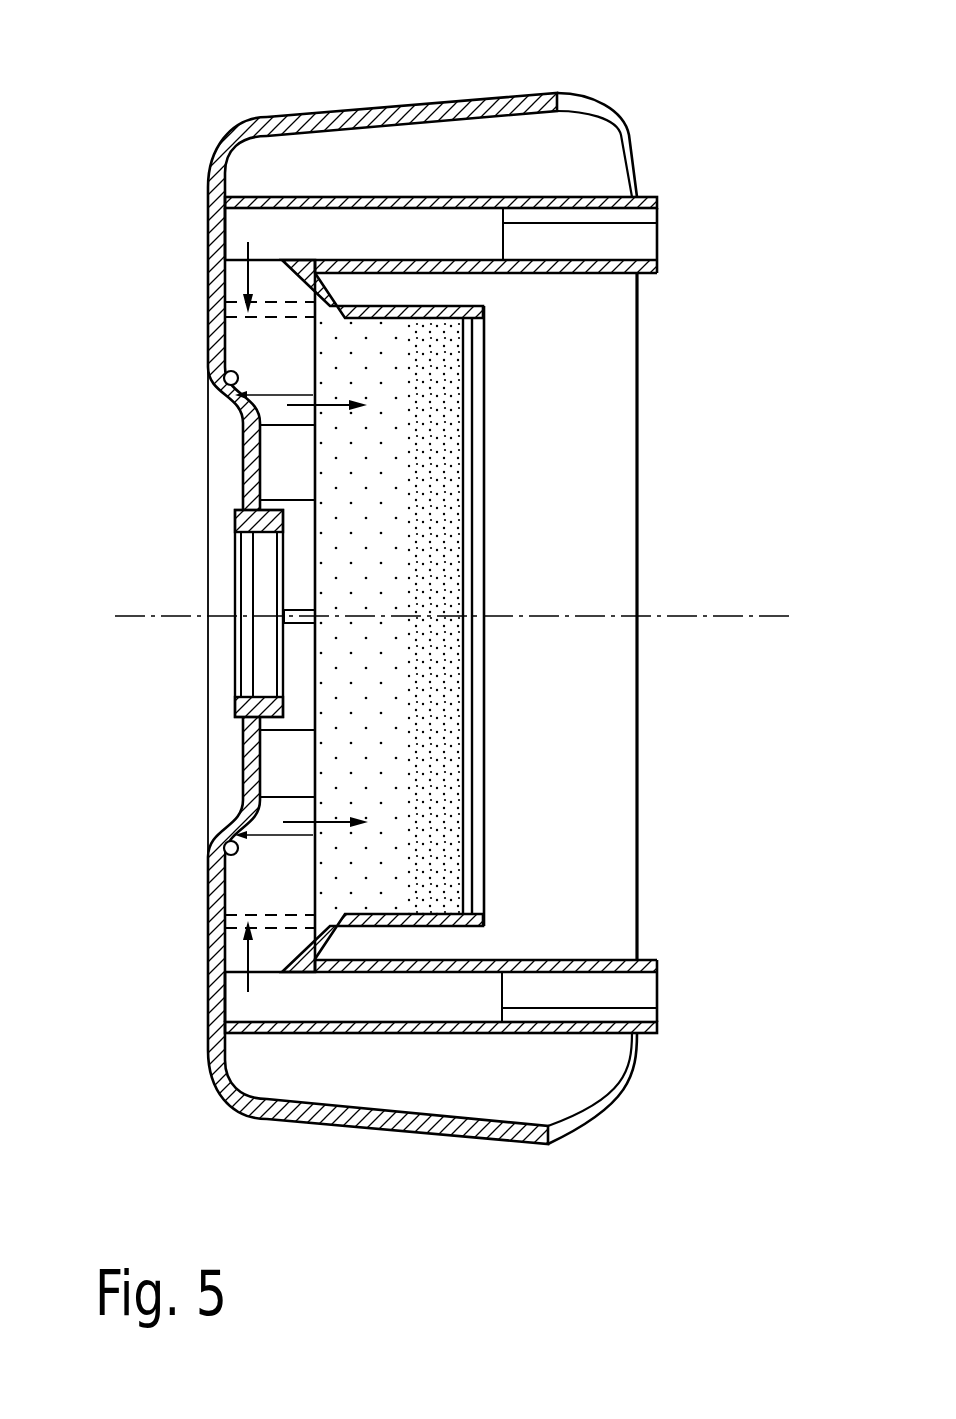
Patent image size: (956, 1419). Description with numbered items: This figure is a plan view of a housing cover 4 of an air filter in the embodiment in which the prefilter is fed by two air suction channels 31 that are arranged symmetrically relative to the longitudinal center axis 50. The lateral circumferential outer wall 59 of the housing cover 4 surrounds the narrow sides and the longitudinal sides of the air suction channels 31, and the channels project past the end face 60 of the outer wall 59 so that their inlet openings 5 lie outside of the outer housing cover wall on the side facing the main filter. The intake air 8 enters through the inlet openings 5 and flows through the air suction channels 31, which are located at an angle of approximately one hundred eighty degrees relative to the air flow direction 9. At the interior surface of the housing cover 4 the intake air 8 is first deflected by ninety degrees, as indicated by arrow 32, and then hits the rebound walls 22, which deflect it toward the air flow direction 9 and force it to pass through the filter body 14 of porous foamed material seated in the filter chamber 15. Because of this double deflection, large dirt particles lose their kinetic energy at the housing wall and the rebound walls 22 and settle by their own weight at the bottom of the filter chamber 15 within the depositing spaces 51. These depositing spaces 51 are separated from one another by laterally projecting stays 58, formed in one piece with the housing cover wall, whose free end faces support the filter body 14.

The housing cover 4 is at (215, 908).
The inlet opening 5 is at (660, 217).
The intake air 8 is at (682, 235).
The air flow direction 9 is at (300, 410).
The filter body 14 is at (450, 453).
The filter chamber 15 is at (441, 923).
The rebound wall 22 is at (273, 417).
The air suction channel 31 is at (583, 248).
The arrow 32 is at (270, 236).
The longitudinal center axis 50 is at (755, 622).
The depositing space 51 is at (273, 770).
The stay 58 is at (293, 500).
The outer wall 59 is at (450, 100).
The end face 60 is at (640, 503).